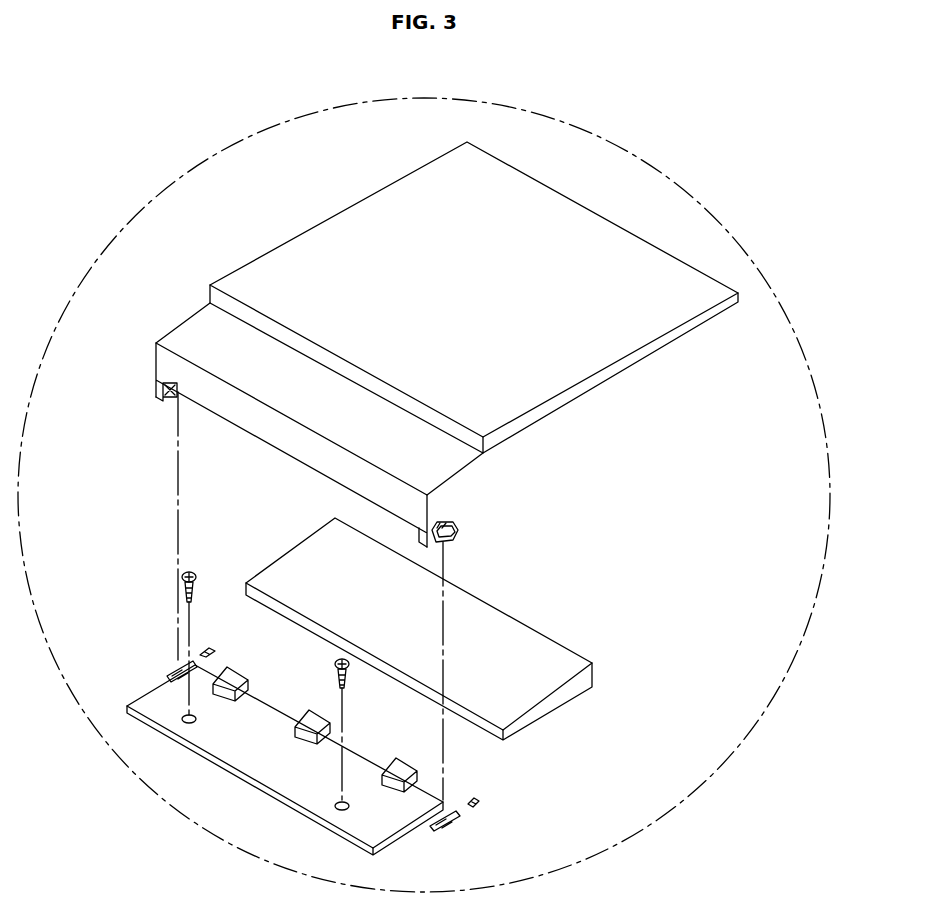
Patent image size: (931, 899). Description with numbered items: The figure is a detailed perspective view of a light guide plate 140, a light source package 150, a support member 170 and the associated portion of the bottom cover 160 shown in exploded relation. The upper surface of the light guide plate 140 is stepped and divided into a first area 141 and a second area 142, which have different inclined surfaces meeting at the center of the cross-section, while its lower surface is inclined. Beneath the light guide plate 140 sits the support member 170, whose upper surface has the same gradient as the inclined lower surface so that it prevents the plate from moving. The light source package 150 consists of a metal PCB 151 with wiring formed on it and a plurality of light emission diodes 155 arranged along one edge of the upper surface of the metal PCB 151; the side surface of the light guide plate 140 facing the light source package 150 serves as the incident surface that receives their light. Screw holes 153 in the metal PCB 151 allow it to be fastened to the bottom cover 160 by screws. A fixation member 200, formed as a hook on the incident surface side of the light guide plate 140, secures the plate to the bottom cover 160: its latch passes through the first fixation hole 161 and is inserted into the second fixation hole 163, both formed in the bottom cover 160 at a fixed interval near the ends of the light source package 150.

The light guide plate 140 is at (632, 407).
The first area 141 is at (299, 245).
The second area 142 is at (268, 388).
The light source package 150 is at (139, 688).
The metal PCB 151 is at (163, 715).
The screw hole 153 is at (337, 796).
The light emission diode 155 is at (312, 713).
The bottom cover 160 is at (656, 832).
The first fixation hole 161 is at (457, 815).
The second fixation hole 163 is at (479, 801).
The support member 170 is at (535, 642).
The fixation member 200 is at (458, 531).